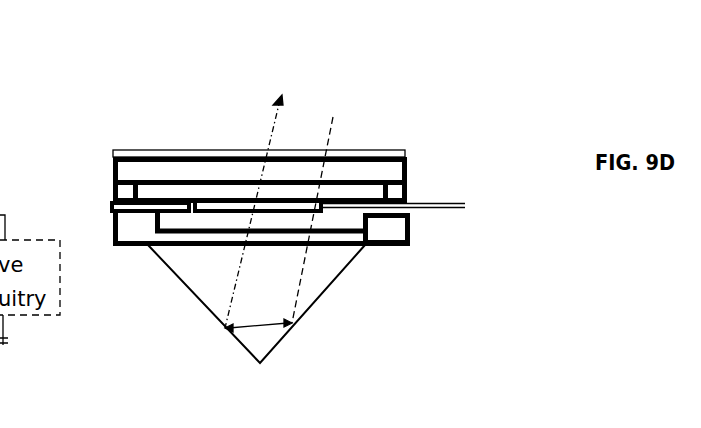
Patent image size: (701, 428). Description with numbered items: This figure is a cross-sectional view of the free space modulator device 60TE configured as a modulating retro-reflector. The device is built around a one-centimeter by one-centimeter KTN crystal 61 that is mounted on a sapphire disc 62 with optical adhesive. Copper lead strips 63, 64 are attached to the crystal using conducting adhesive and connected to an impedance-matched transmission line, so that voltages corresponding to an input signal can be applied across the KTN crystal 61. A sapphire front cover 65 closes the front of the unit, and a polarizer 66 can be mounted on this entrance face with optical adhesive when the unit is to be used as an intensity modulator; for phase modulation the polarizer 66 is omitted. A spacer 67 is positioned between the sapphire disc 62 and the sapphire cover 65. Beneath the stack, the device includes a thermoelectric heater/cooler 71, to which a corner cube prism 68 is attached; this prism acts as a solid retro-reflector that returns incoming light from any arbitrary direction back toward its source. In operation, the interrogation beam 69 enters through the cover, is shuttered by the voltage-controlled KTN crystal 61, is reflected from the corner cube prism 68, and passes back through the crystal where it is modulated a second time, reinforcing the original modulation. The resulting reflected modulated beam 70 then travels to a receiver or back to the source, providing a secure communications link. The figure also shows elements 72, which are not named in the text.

The free space modulator device 60TE is at (405, 73).
The KTN crystal 61 is at (199, 214).
The sapphire disc 62 is at (366, 246).
The copper lead strip 63 is at (420, 211).
The copper lead strip 64 is at (436, 211).
The sapphire front cover 65 is at (113, 161).
The polarizer 66 is at (201, 181).
The spacer 67 is at (116, 207).
The corner cube prism 68 is at (348, 266).
The interrogation beam 69 is at (333, 117).
The reflected modulated beam 70 is at (273, 121).
The thermoelectric heater/cooler 71 is at (410, 228).
The spacer 72 is at (121, 191).